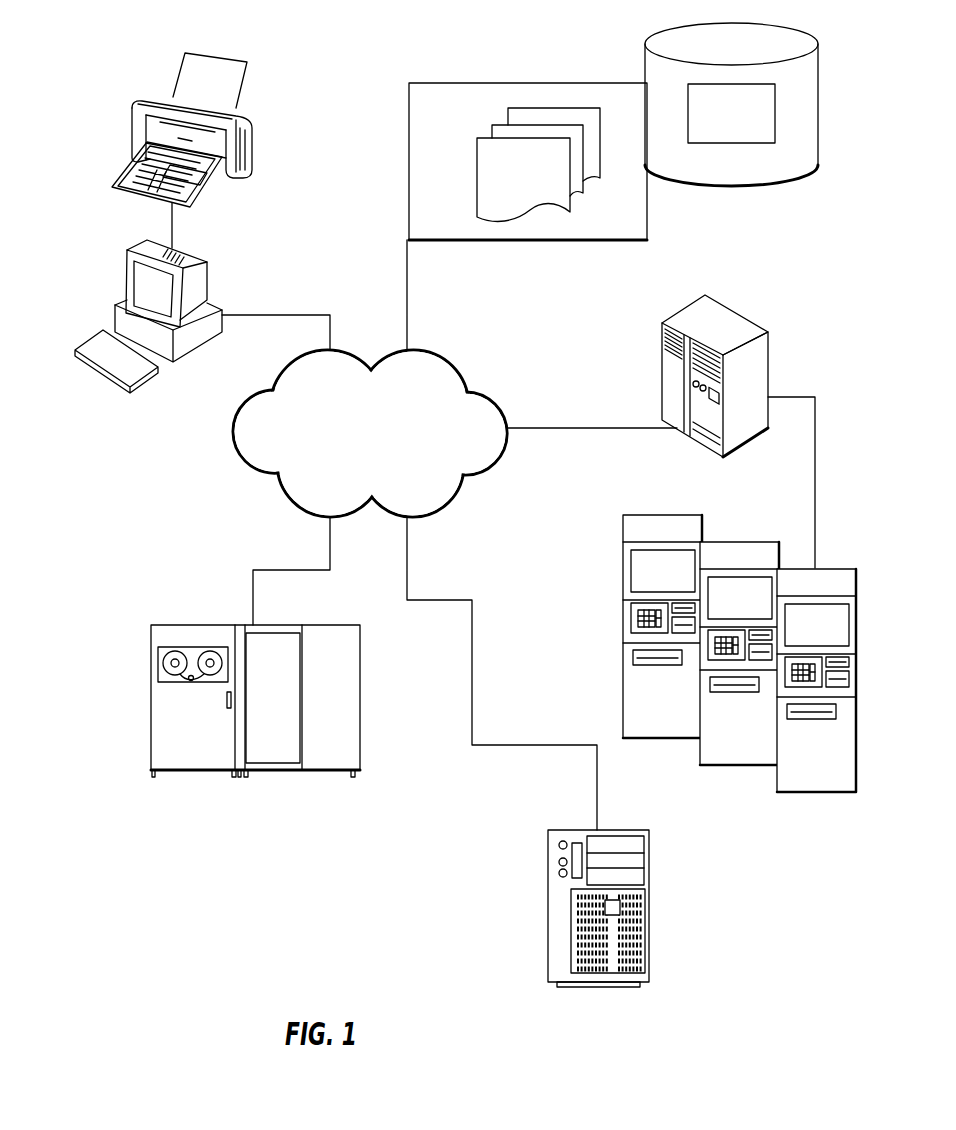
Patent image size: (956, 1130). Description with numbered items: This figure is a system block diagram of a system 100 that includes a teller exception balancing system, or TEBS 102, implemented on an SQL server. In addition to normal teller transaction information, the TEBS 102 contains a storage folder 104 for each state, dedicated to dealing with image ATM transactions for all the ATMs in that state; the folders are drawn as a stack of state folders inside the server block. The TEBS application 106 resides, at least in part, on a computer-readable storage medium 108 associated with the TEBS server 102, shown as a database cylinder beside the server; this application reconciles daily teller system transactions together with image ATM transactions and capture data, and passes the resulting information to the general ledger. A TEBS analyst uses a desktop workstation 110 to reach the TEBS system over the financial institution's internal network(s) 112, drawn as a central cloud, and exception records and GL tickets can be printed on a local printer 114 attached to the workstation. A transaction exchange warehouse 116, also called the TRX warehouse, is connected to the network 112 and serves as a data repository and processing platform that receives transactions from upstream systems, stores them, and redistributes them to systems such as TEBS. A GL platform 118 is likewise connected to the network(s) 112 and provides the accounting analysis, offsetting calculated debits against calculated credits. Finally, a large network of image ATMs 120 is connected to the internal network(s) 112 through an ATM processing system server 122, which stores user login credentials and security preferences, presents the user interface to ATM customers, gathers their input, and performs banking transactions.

The system 100 is at (230, 931).
The teller exception balancing system (TEBS) 102 is at (409, 175).
The storage folder 104 is at (500, 122).
The TEBS application 106 is at (749, 129).
The computer-readable storage medium 108 is at (731, 126).
The desktop workstation 110 is at (115, 315).
The network(s) 112 is at (355, 465).
The local printer 114 is at (236, 178).
The transaction exchange warehouse 116 is at (151, 716).
The GL platform 118 is at (650, 920).
The image ATMs 120 is at (623, 607).
The ATM processing system server 122 is at (760, 362).